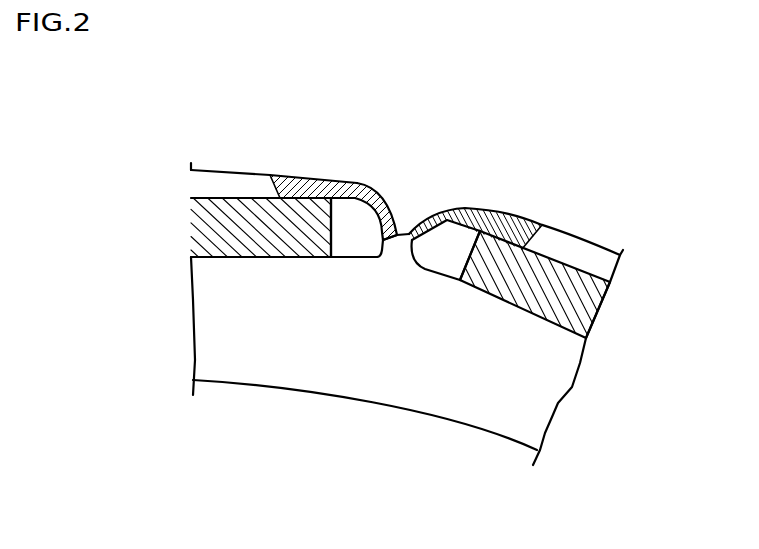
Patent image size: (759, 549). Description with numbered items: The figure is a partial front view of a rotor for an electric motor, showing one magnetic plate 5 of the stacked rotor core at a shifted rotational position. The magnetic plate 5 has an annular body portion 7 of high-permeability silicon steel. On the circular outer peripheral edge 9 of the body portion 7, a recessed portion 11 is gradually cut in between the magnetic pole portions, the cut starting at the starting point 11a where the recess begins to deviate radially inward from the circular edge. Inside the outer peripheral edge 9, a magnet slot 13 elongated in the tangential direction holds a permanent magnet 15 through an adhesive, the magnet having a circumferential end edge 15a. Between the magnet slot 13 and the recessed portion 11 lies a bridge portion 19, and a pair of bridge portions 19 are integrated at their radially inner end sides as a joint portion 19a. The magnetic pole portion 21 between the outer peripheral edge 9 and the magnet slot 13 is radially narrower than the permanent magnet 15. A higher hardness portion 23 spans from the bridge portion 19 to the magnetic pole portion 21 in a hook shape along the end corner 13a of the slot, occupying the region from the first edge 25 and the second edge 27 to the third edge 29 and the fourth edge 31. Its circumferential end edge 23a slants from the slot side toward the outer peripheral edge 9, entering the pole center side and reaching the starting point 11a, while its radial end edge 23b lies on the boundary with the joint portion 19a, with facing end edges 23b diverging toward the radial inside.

The magnetic plate 5 is at (596, 358).
The body portion 7 is at (540, 423).
The outer peripheral edge 9 is at (232, 170).
The recessed portion 11 is at (399, 233).
The starting point of the recessed portion 11a is at (272, 174).
The magnet slot 13 is at (221, 257).
The end corner of the opening 13a is at (352, 199).
The permanent magnet 15 is at (203, 232).
The circumferential end edge of the permanent magnet 15a is at (331, 245).
The bridge portion 19 is at (374, 200).
The joint portion 19a is at (400, 237).
The magnetic pole portion 21 is at (208, 176).
The higher hardness portion 23 is at (322, 188).
The end edge of the higher hardness portion in the circumferential direction 23a is at (272, 183).
The end edge of the higher hardness portion in the radial direction 23b is at (393, 237).
The first edge 25 is at (342, 199).
The second edge 27 is at (364, 204).
The third edge 29 is at (305, 177).
The fourth edge 31 is at (403, 228).